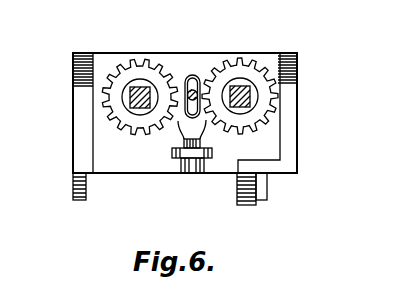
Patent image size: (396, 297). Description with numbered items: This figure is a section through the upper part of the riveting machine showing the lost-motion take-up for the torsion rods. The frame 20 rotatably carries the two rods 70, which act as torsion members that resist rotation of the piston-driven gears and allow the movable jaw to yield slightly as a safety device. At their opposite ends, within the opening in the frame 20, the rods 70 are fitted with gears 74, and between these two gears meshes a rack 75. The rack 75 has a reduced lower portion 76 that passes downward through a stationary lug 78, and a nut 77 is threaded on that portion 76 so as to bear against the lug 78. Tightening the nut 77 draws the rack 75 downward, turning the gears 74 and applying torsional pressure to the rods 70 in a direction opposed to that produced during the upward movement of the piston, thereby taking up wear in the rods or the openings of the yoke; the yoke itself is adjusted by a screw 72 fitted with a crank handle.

The frame 20 is at (207, 129).
The rods 70 is at (130, 98).
The screw 72 is at (200, 102).
The gears 74 is at (129, 64).
The rack 75 is at (187, 61).
The reduced lower portion 76 is at (183, 141).
The nut 77 is at (184, 160).
The stationary lug 78 is at (213, 160).